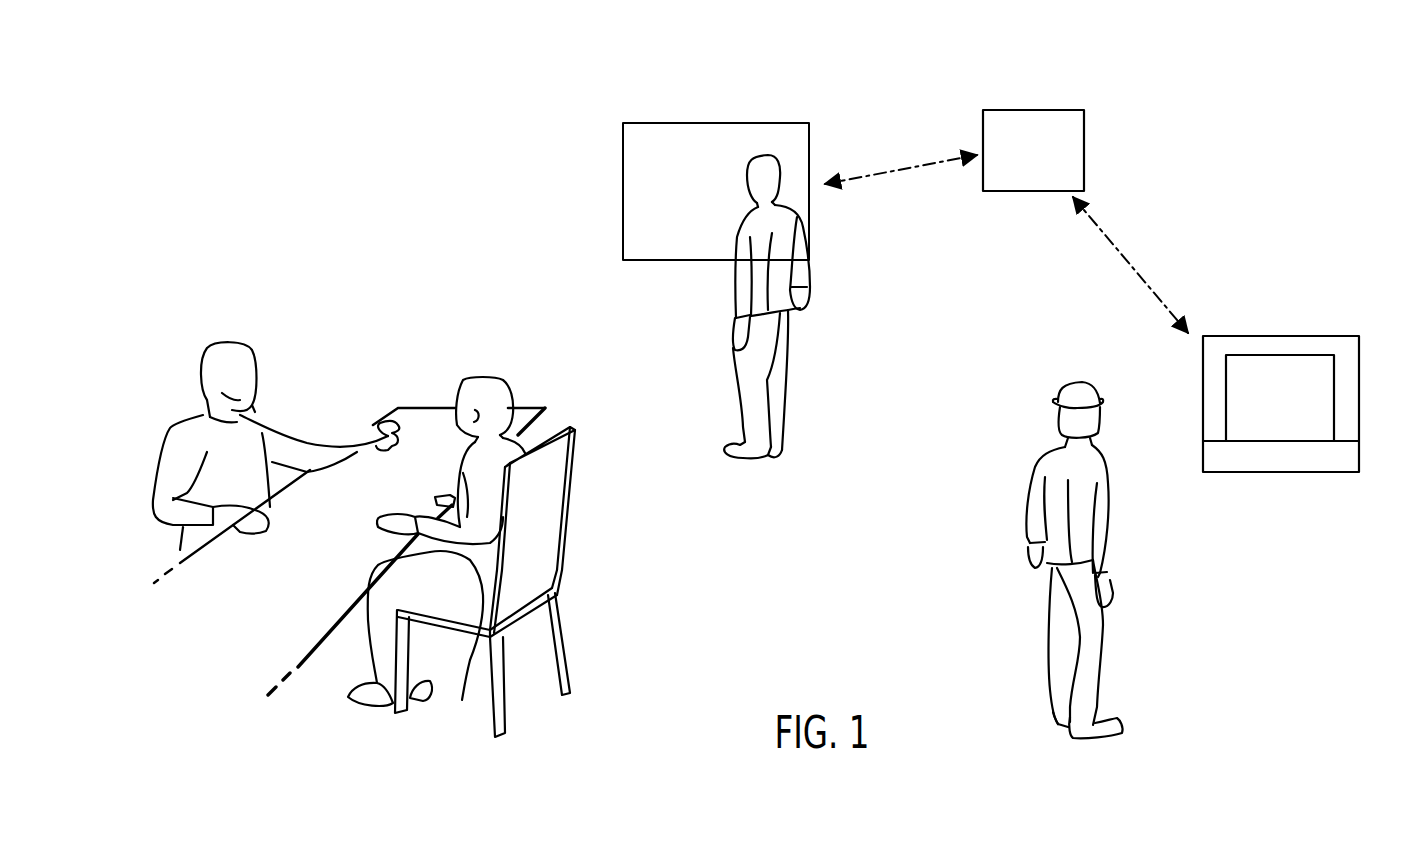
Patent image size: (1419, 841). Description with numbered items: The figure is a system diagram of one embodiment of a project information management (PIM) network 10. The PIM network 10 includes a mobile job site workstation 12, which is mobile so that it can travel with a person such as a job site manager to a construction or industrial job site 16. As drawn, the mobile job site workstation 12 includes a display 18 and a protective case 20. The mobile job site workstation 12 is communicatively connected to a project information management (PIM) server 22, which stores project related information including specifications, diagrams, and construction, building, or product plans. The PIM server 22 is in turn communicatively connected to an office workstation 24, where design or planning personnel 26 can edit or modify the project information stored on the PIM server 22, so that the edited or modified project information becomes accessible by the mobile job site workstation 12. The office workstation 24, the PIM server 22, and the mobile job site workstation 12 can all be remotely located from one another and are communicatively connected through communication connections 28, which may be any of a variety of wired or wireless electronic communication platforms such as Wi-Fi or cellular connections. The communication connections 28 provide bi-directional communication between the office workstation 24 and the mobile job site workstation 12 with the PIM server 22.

The project information management (PIM) network 10 is at (873, 112).
The mobile job site workstation 12 is at (1312, 336).
The construction or industrial job site 16 is at (1277, 287).
The display 18 is at (1263, 409).
The protective case 20 is at (1360, 457).
The project information management (PIM) server 22 is at (1035, 110).
The office workstation 24 is at (665, 107).
The design or planning personnel 26 is at (357, 350).
The communication connections 28 is at (912, 168).